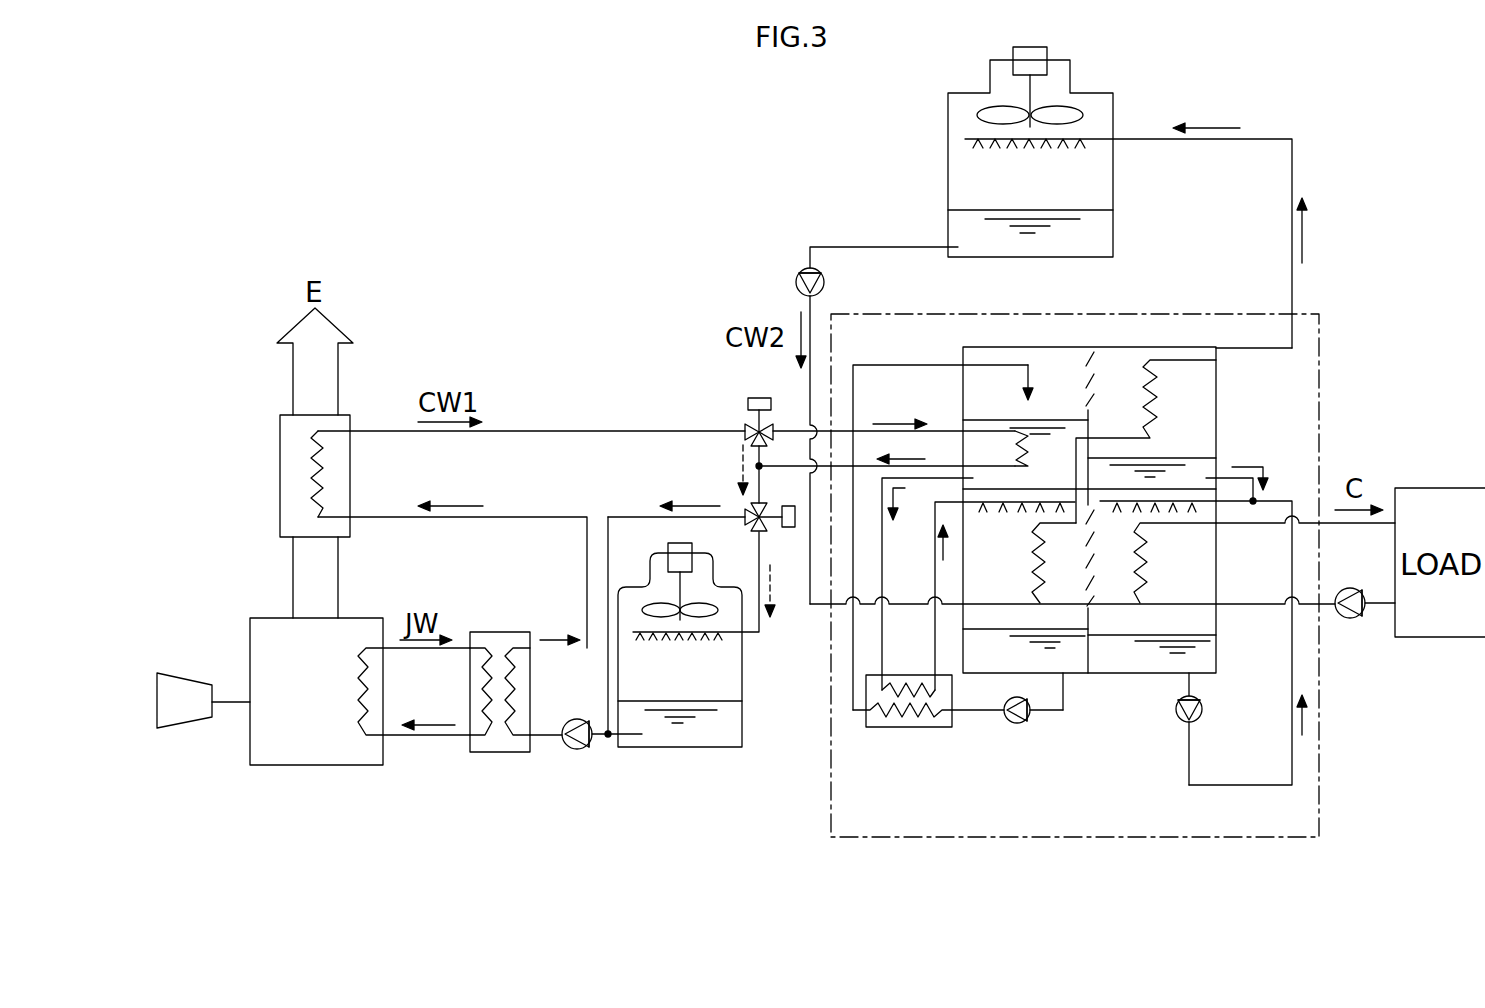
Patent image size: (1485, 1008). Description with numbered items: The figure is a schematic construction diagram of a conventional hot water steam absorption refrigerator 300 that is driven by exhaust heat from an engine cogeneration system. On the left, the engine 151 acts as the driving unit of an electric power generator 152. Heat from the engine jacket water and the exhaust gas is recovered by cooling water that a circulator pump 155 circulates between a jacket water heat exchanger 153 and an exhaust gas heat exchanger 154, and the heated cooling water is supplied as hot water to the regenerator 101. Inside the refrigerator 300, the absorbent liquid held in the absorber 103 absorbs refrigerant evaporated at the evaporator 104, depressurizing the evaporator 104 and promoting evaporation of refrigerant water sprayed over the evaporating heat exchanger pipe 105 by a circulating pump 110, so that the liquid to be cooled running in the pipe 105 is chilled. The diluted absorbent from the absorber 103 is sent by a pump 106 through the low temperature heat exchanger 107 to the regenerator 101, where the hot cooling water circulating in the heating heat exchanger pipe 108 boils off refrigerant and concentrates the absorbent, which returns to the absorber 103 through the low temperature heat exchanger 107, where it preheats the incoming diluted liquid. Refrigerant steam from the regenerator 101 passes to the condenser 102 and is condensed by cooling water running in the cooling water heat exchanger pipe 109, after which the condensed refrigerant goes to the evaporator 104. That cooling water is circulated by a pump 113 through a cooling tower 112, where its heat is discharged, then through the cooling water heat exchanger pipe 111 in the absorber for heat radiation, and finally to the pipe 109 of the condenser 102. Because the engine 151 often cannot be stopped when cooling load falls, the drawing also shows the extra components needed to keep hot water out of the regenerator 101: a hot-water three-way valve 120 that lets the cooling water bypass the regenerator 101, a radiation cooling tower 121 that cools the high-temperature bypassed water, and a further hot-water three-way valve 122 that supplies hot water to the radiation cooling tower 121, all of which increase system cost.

The regenerator 101 is at (1055, 382).
The condenser 102 is at (1185, 441).
The absorber 103 is at (1060, 615).
The evaporator 104 is at (1168, 624).
The evaporating heat exchanger pipe 105 is at (1178, 603).
The pump 106 is at (1012, 725).
The low temperature heat exchanger 107 is at (907, 727).
The heating heat exchanger pipe 108 is at (990, 430).
The cooling water heat exchanger pipe 109 is at (1185, 352).
The circulating pump 110 is at (1178, 718).
The cooling water heat exchanger pipe 111 is at (990, 603).
The cooling tower 112 is at (948, 121).
The pump 113 is at (796, 283).
The hot-water three-way valve 120 is at (748, 428).
The radiation cooling tower 121 is at (703, 747).
The hot-water three-way valve 122 is at (748, 513).
The engine 151 is at (315, 765).
The electric power generator 152 is at (183, 675).
The jacket water heat exchanger 153 is at (498, 752).
The exhaust gas heat exchanger 154 is at (280, 480).
The circulator pump 155 is at (577, 750).
The hot water steam absorption refrigerator 300 is at (1320, 352).